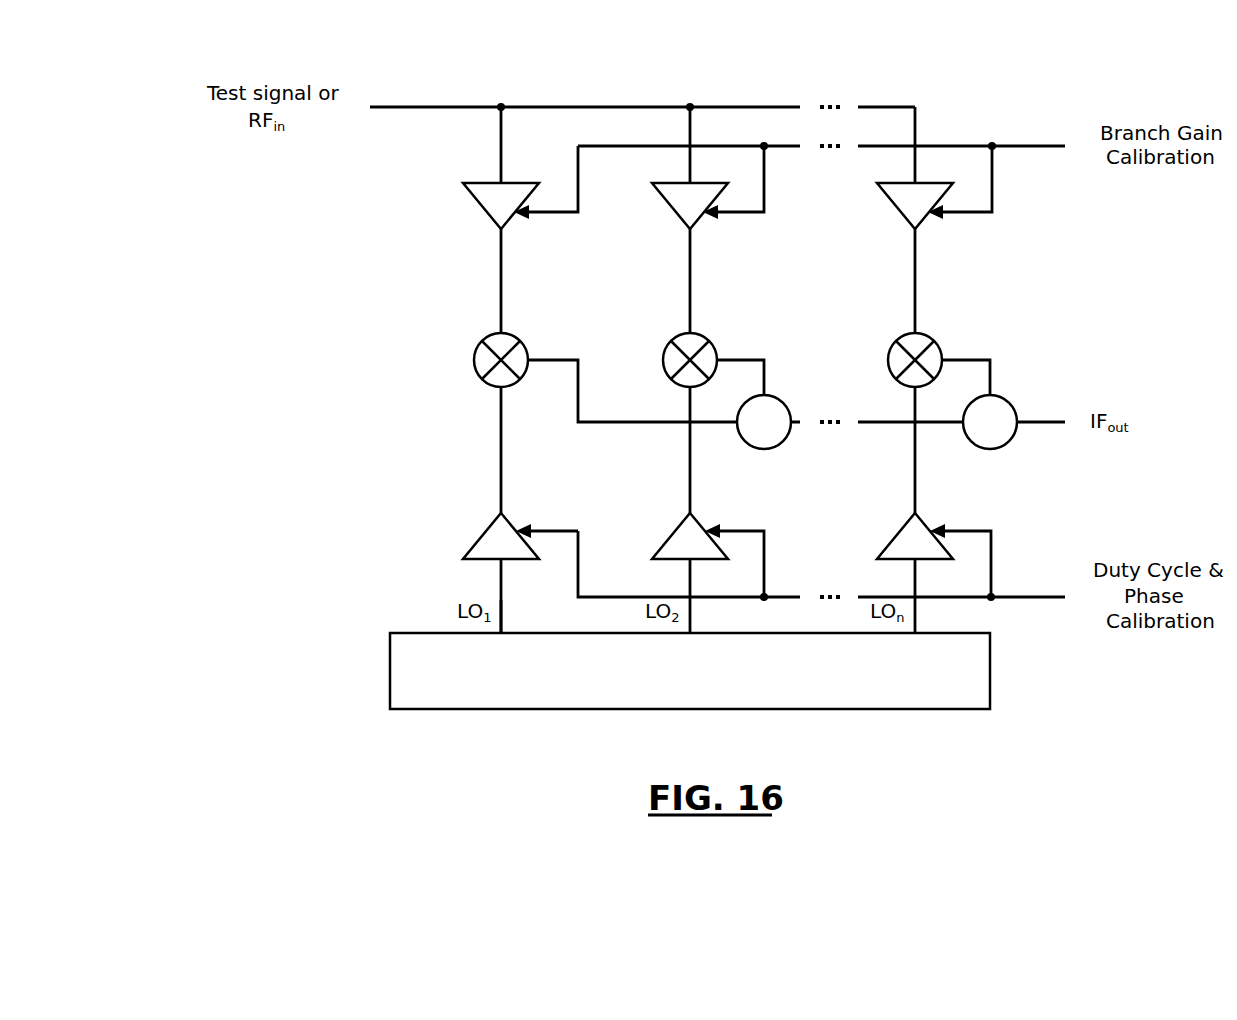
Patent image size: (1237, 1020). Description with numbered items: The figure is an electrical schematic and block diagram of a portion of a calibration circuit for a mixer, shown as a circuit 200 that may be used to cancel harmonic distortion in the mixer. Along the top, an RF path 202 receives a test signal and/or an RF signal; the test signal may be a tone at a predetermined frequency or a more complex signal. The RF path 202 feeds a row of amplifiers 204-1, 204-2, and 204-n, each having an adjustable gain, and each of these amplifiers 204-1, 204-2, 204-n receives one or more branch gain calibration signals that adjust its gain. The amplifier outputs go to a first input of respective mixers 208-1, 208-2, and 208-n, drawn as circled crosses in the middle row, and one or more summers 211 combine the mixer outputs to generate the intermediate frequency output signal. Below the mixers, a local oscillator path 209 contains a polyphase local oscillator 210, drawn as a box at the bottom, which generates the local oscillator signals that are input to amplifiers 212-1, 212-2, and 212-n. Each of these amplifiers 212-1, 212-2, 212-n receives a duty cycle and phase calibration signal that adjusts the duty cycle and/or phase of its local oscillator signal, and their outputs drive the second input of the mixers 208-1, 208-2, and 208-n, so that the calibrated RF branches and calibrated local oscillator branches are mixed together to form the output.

The circuit 200 is at (315, 70).
The RF path 202 is at (540, 70).
The amplifier 204-1 is at (492, 214).
The amplifier 204-2 is at (681, 214).
The amplifier 204-n is at (906, 214).
The mixer 208-1 is at (481, 342).
The mixer 208-2 is at (670, 342).
The mixer 208-n is at (895, 342).
The local oscillator path 209 is at (426, 578).
The polyphase local oscillator 210 is at (389, 672).
The summer 211 is at (776, 446).
The amplifier 212-1 is at (490, 537).
The amplifier 212-2 is at (680, 537).
The amplifier 212-n is at (905, 537).